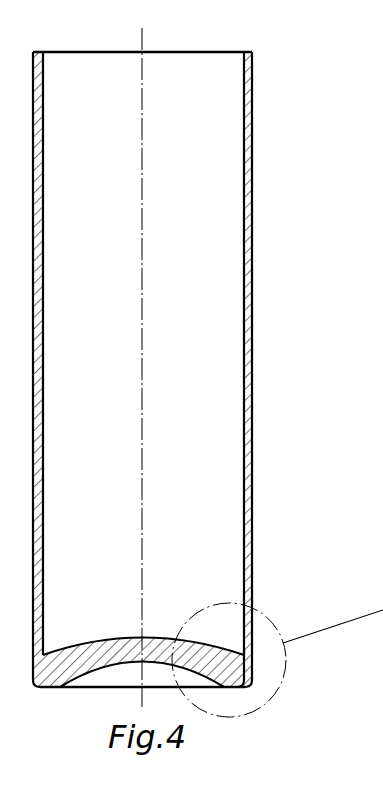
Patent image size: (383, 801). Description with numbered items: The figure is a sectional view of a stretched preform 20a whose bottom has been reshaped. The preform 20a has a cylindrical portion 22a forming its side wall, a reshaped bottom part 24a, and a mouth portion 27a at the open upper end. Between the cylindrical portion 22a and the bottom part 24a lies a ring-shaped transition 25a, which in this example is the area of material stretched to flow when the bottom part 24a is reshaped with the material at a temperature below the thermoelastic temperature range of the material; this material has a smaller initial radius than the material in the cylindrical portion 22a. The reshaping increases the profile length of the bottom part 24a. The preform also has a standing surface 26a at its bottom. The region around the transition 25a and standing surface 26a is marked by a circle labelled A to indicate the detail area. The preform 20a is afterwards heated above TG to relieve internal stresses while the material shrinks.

The preform 20a is at (178, 363).
The cylindrical portion 22a is at (252, 410).
The bottom part 24a is at (82, 648).
The ring-shaped transition 25a is at (243, 667).
The standing surface 26a is at (218, 686).
The mouth portion 27a is at (218, 60).
The detail area A is at (267, 620).